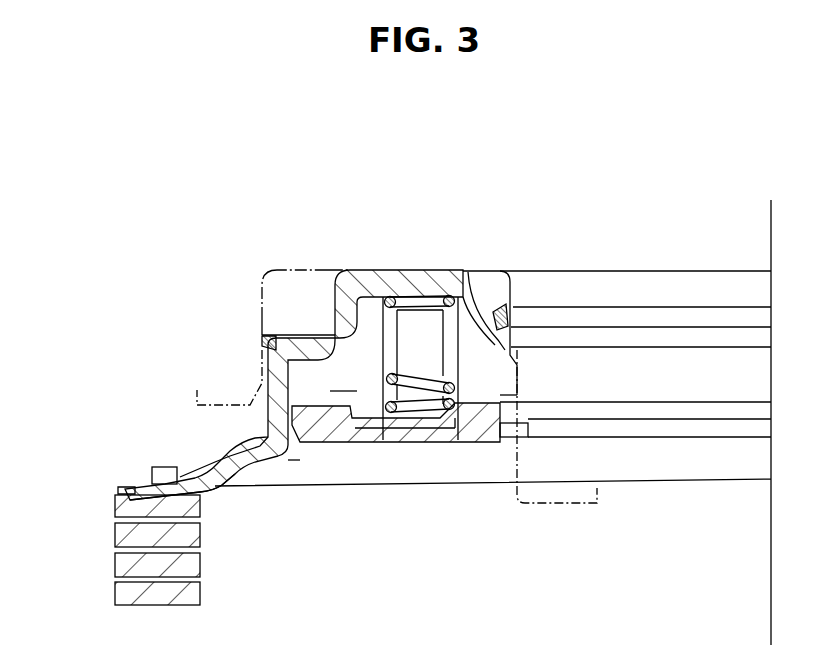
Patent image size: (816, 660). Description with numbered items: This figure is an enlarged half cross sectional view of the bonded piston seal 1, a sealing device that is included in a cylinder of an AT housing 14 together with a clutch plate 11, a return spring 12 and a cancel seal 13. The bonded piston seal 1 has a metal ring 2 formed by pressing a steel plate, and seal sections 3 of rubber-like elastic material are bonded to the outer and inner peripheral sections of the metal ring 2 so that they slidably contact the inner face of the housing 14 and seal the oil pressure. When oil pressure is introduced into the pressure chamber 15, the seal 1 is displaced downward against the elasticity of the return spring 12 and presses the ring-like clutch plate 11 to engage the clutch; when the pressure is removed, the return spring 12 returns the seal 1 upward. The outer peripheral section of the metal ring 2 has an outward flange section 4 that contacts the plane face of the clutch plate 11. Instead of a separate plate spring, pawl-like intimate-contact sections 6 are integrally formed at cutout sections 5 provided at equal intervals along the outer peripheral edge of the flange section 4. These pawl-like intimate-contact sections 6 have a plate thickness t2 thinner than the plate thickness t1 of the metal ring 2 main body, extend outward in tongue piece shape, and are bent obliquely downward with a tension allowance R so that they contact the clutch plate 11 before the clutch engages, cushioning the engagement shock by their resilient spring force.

The bonded piston seal 1 is at (478, 270).
The metal ring 2 is at (368, 285).
The seal sections 3 is at (262, 342).
The outward flange section 4 is at (172, 465).
The cutout sections 5 is at (155, 467).
The pawl-like intimate-contact sections 6 is at (126, 489).
The clutch plate 11 is at (200, 508).
The return spring 12 is at (412, 383).
The cancel seal 13 is at (428, 442).
The AT housing 14 is at (262, 272).
The pressure chamber 15 is at (292, 306).
The tension allowance R is at (115, 517).
The plate thickness of the metal ring main body t1 is at (210, 447).
The plate thickness of the pawl-like intimate-contact sections t2 is at (228, 472).